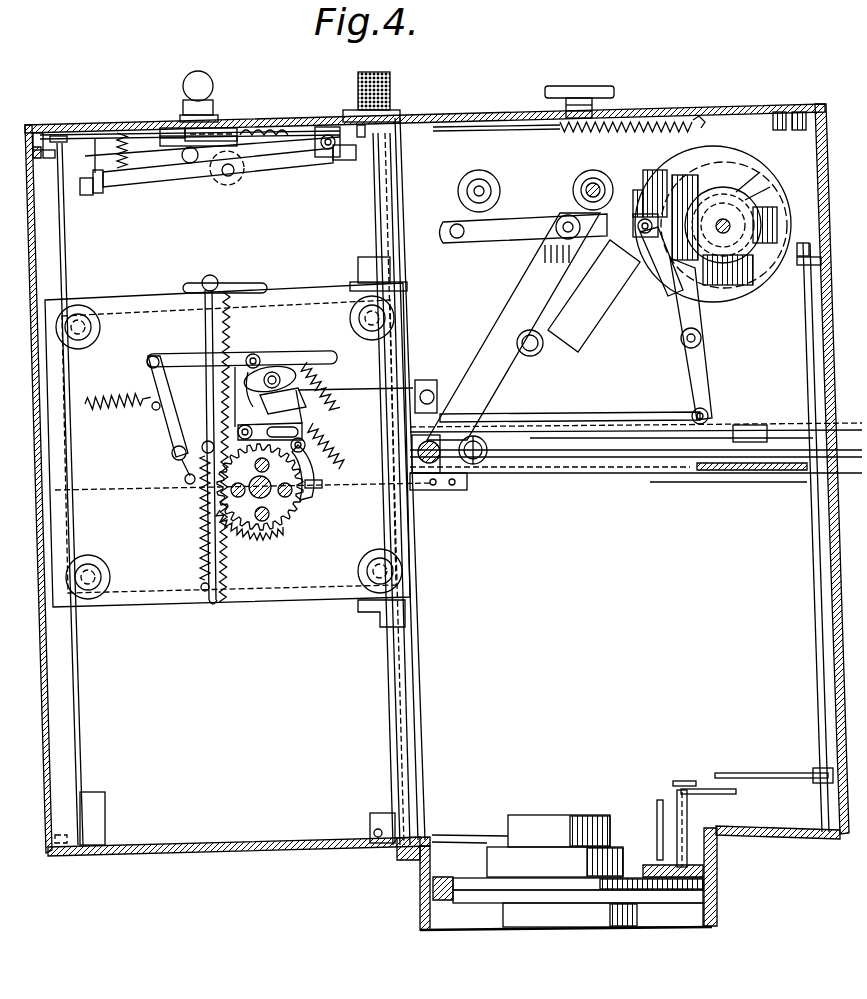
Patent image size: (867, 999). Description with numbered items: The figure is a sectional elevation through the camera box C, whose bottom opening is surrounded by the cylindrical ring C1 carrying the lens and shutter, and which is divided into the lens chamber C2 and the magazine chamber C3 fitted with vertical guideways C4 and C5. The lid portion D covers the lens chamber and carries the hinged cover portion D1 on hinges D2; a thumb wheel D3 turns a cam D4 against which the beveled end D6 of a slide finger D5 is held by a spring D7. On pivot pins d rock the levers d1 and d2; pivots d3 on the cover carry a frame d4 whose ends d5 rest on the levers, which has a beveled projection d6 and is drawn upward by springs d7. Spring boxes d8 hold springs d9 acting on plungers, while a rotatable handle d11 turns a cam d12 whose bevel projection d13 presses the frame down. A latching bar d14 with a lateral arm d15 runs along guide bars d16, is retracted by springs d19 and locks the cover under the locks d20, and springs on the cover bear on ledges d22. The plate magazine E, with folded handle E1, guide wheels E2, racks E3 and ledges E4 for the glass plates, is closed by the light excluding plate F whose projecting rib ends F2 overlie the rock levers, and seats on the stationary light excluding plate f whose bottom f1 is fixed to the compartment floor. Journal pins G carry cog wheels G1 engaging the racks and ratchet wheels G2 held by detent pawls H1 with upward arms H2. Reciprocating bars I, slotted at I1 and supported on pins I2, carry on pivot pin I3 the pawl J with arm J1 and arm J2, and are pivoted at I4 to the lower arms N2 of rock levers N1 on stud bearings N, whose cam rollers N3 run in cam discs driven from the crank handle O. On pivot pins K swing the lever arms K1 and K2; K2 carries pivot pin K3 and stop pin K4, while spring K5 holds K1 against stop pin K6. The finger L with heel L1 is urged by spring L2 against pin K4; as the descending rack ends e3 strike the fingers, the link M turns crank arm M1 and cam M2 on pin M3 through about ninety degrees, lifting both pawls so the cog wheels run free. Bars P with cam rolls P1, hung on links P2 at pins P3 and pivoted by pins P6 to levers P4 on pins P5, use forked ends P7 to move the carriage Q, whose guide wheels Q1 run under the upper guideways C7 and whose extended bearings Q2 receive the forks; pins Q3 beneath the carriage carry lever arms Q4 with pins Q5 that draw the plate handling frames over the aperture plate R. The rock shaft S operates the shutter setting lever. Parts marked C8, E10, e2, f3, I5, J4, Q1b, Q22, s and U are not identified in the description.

The camera box C is at (297, 850).
The cylindrical ring C1 is at (717, 912).
The lens chamber C2 is at (667, 611).
The magazine chamber C3 is at (217, 698).
The vertical guideways C4 is at (421, 664).
The vertical guideways C5 is at (78, 648).
The upper guideways C7 is at (712, 405).
The bar C8 is at (662, 475).
The lid portion D is at (660, 121).
The cover portion D1 is at (145, 130).
The hinges D2 is at (450, 95).
The thumb wheel D3 is at (490, 124).
The cam D4 is at (610, 122).
The slide finger D5 is at (588, 86).
The beveled end D6 is at (442, 134).
The spring D7 is at (700, 128).
The pivot pins d is at (220, 176).
The rock lever d1 is at (158, 187).
The rock lever d2 is at (322, 172).
The pivots d3 is at (292, 128).
The frame d4 is at (250, 128).
The frame ends d5 is at (88, 176).
The beveled projection d6 is at (195, 163).
The springs d7 is at (87, 133).
The spring boxes d8 is at (392, 88).
The springs d9 is at (52, 188).
The rotatable handle d11 is at (254, 71).
The cam d12 is at (172, 130).
The bevel projection d13 is at (154, 159).
The latching bar d14 is at (252, 178).
The lateral arm d15 is at (117, 133).
The guide bars d16 is at (416, 101).
The springs d19 is at (395, 85).
The locks d20 is at (33, 130).
The ledges d22 is at (168, 168).
The plate magazine E is at (239, 445).
The handle E1 is at (240, 286).
The guide wheels E2 is at (92, 323).
The racks E3 is at (228, 436).
The ledges E4 is at (374, 622).
The block E10 is at (360, 258).
The bar e2 is at (800, 262).
The rack bar ends e3 is at (215, 606).
The light excluding plate F is at (372, 186).
The projecting rib ends F2 is at (355, 112).
The stationary light excluding plate f is at (395, 722).
The plate bottom f1 is at (380, 846).
The pin f3 is at (362, 529).
The journal pins G is at (260, 503).
The cog wheels G1 is at (260, 532).
The ratchet wheels G2 is at (302, 498).
The detent pawls H1 is at (314, 488).
The upwardly extending arms H2 is at (270, 412).
The reciprocating bars I is at (497, 930).
The slots I1 is at (319, 377).
The pins I2 is at (302, 366).
The pivot pin I3 is at (345, 440).
The pivot I4 is at (688, 413).
The pin I5 is at (210, 430).
The pawl J is at (193, 497).
The upwardly extending arm J1 is at (274, 368).
The arm J2 is at (303, 400).
The lever J4 is at (267, 422).
The pivot pins K is at (172, 452).
The upper lever arm K1 is at (156, 412).
The lever arm K2 is at (186, 482).
The pivot pin K3 is at (196, 484).
The stop pin K4 is at (182, 466).
The spring K5 is at (128, 398).
The stop pin K6 is at (153, 417).
The finger L is at (206, 441).
The heel extension L1 is at (194, 532).
The spring L2 is at (199, 546).
The link M is at (269, 384).
The crank arm M1 is at (242, 389).
The cam M2 is at (262, 368).
The pin M3 is at (270, 365).
The stud bearings N is at (703, 338).
The rock lever N1 is at (686, 308).
The lower arm N2 is at (703, 385).
The cam rollers N3 is at (594, 296).
The crank handle O is at (545, 343).
The bars P is at (524, 228).
The cam rolls P1 is at (642, 214).
The links P2 is at (460, 206).
The pins P3 is at (485, 176).
The levers P4 is at (513, 326).
The pins P5 is at (584, 176).
The pivot pins P6 is at (550, 212).
The forked ends P7 is at (476, 358).
The carriage Q is at (476, 466).
The guide wheels Q1 is at (743, 178).
The roller Q1b is at (500, 470).
The extended bearings Q2 is at (434, 492).
The pins Q3 is at (772, 188).
The lever arms Q4 is at (707, 150).
The pins Q5 is at (668, 182).
The bar Q22 is at (760, 475).
The aperture plate R is at (620, 459).
The rock shaft S is at (814, 540).
The pump rod assembly s is at (655, 840).
The blocks U is at (789, 121).